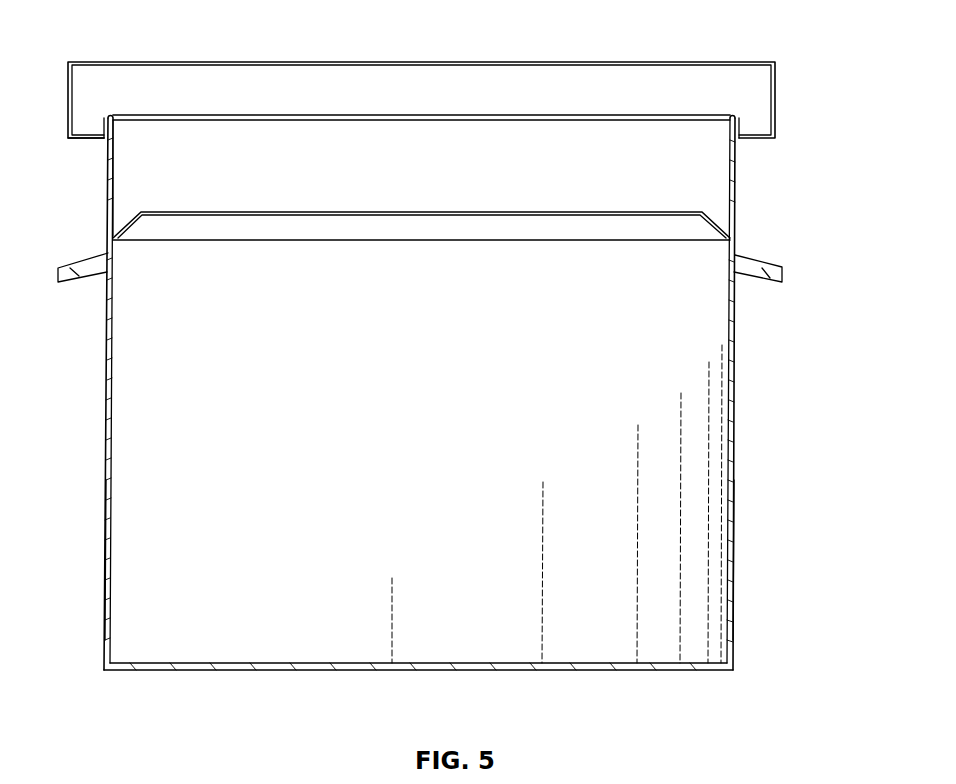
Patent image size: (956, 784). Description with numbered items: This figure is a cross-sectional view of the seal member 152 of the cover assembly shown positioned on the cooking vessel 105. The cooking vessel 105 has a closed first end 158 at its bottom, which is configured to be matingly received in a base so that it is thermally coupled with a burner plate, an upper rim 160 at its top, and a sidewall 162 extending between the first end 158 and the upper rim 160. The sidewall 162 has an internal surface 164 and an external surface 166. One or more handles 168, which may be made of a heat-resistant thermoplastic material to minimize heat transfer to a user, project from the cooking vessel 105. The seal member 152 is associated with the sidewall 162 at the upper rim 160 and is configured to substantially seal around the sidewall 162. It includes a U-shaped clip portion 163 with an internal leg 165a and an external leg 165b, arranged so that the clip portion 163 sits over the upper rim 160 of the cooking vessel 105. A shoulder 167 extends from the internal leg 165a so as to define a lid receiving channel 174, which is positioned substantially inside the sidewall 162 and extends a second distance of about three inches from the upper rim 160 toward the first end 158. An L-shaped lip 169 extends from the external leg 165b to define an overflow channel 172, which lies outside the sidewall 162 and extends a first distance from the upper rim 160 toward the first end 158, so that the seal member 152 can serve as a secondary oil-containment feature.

The cooking vessel 105 is at (423, 411).
The seal member 152 is at (778, 75).
The closed first end 158 is at (714, 668).
The upper rim 160 is at (738, 187).
The sidewall 162 is at (734, 573).
The U-shaped clip portion 163 is at (662, 115).
The internal surface 164 is at (108, 564).
The internal leg 165a is at (118, 160).
The external leg 165b is at (742, 130).
The external surface 166 is at (102, 474).
The shoulder 167 is at (592, 228).
The handles 168 is at (750, 258).
The L-shaped lip 169 is at (100, 138).
The overflow channel 172 is at (88, 135).
The lid receiving channel 174 is at (142, 212).